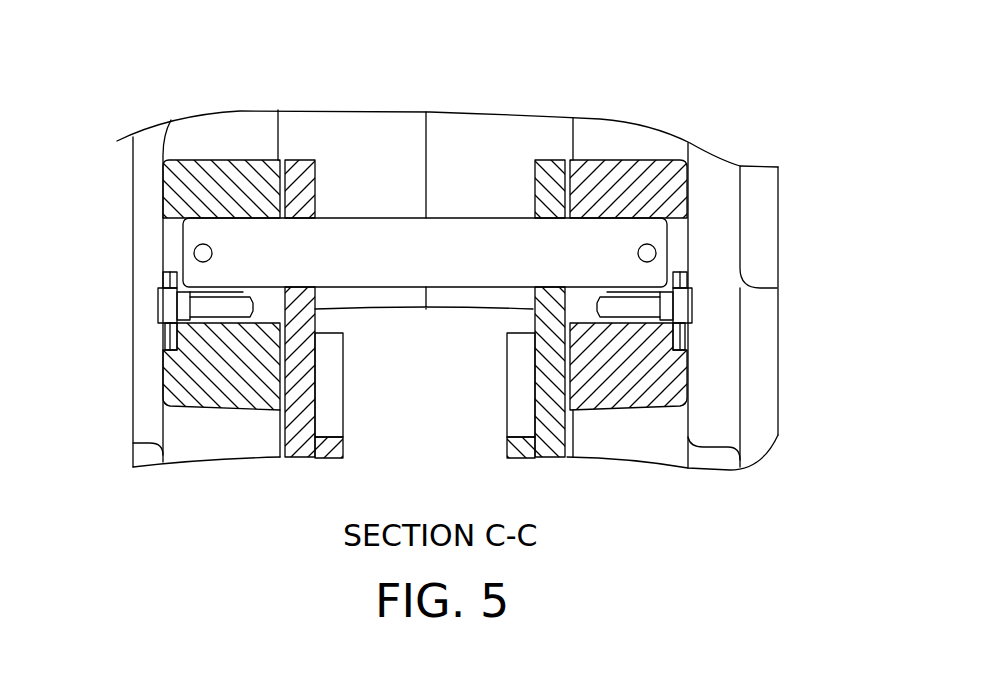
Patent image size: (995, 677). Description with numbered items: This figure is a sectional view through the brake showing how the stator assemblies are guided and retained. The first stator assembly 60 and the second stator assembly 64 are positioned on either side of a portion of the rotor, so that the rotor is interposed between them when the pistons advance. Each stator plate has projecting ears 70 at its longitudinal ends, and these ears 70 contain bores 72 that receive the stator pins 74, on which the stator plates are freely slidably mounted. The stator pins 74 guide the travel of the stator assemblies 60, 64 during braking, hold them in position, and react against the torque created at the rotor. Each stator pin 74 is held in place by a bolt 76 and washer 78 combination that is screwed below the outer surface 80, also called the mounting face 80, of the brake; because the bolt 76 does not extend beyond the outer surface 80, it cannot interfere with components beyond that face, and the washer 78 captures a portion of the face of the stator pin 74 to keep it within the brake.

The first stator assembly 60 is at (538, 468).
The second stator assembly 64 is at (310, 467).
The projecting ears 70 is at (542, 162).
The bores 72 is at (680, 220).
The stator pins 74 is at (456, 218).
The bolt 76 is at (697, 297).
The washer 78 is at (680, 273).
The outer surface 80 is at (132, 458).